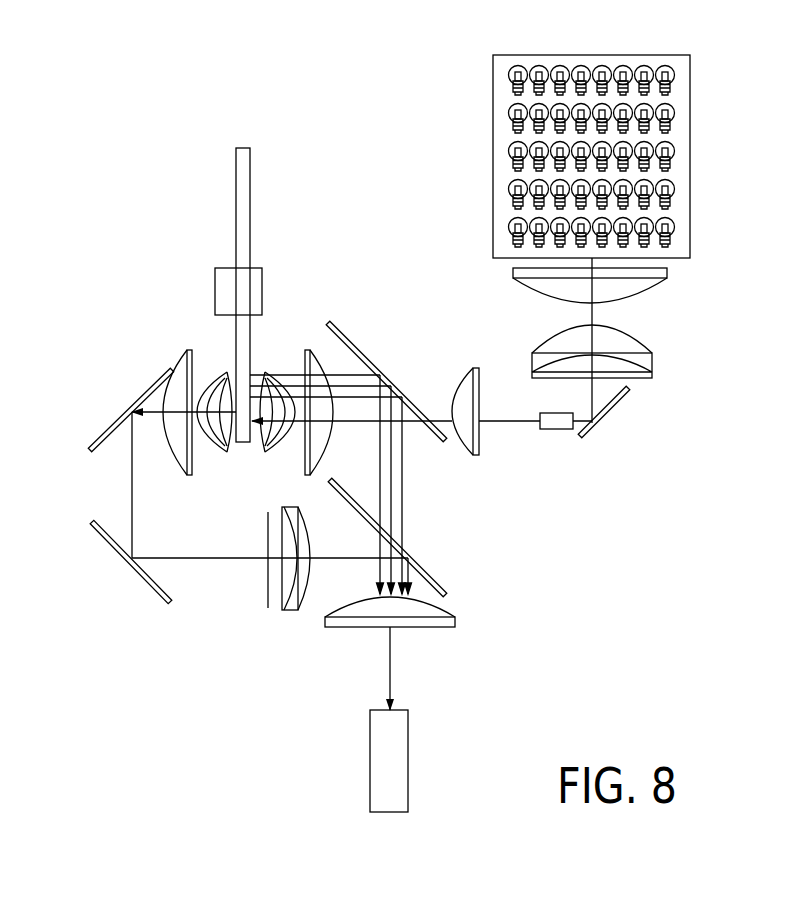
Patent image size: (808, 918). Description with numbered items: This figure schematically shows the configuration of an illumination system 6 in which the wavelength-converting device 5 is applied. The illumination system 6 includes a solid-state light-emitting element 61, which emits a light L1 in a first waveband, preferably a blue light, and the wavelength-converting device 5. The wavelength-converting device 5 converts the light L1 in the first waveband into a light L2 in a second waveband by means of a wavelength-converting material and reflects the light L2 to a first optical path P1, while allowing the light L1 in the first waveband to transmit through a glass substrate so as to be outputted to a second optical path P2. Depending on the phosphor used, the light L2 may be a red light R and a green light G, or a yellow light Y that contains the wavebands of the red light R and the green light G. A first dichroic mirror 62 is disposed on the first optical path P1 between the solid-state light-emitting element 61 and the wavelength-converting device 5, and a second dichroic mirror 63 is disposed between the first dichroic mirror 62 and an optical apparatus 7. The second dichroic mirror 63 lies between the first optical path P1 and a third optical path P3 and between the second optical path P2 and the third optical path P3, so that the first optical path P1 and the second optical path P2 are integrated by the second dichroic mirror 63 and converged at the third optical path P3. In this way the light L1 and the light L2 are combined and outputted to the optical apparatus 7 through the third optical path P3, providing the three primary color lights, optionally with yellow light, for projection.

The wavelength-converting device 5 is at (242, 148).
The illumination system 6 is at (799, 255).
The optical apparatus 7 is at (408, 767).
The solid-state light-emitting element 61 is at (690, 130).
The first dichroic mirror 62 is at (357, 342).
The second dichroic mirror 63 is at (438, 583).
The light in a first waveband L1 is at (521, 422).
The light in a second waveband L2 is at (457, 460).
The first optical path P1 is at (373, 484).
The second optical path P2 is at (245, 486).
The third optical path P3 is at (371, 668).
The red light R is at (382, 467).
The yellow light Y is at (392, 498).
The green light G is at (400, 528).